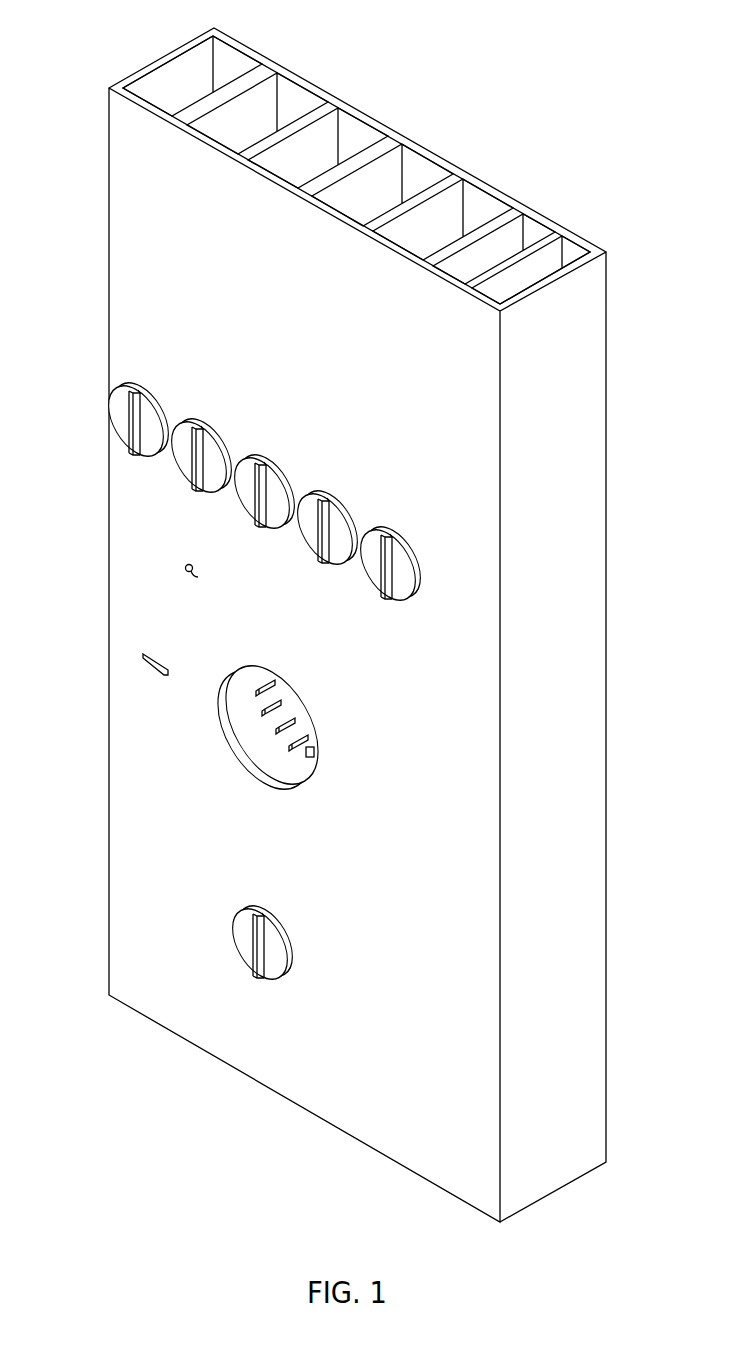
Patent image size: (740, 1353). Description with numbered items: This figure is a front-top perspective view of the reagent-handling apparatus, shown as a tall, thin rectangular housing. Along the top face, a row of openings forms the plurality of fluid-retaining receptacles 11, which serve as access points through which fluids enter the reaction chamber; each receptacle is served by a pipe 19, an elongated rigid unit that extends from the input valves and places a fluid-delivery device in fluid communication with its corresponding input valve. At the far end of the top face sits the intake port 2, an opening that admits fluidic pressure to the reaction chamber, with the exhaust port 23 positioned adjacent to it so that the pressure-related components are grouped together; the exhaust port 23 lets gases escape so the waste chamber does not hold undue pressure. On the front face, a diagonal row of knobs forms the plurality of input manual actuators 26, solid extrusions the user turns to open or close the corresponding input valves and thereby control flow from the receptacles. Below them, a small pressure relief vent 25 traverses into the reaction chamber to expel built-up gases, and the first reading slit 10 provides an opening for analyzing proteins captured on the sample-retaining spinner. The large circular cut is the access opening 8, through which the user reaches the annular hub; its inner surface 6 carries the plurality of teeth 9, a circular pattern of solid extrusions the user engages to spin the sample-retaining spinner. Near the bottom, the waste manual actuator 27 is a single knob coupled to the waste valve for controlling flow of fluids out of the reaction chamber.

The plurality of fluid-retaining receptacles 11 is at (140, 31).
The pipe 19 is at (240, 58).
The intake port 2 is at (535, 232).
The exhaust port 23 is at (575, 253).
The plurality of input manual actuators 26 is at (150, 415).
The pressure relief vent 25 is at (197, 577).
The first reading slit 10 is at (157, 668).
The access opening 8 is at (277, 787).
The inner surface 6 is at (248, 738).
The plurality of teeth 9 is at (287, 683).
The waste manual actuator 27 is at (275, 957).